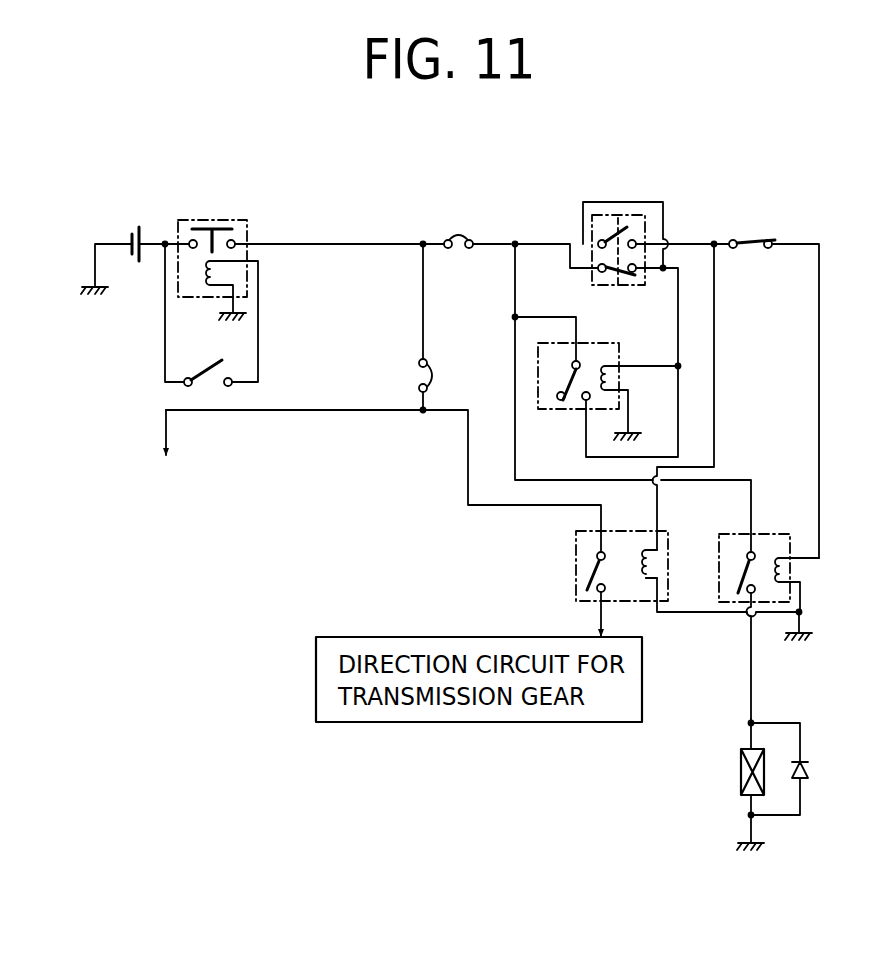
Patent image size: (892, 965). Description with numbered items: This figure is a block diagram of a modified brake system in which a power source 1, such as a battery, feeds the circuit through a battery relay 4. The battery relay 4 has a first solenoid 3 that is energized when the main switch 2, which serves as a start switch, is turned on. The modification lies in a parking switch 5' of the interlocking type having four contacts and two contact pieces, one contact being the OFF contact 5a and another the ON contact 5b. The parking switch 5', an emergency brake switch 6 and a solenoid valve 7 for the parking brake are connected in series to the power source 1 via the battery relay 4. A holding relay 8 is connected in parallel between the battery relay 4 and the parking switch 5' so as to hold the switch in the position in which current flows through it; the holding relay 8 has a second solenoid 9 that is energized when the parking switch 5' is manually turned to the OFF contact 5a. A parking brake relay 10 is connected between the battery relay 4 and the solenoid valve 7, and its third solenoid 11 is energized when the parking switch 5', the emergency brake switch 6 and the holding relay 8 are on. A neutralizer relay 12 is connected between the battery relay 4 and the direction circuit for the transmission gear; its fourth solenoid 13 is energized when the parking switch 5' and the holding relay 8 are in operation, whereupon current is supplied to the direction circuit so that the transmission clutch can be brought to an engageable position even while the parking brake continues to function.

The power source 1 is at (134, 224).
The main switch 2 is at (200, 384).
The first solenoid 3 is at (209, 278).
The battery relay 4 is at (209, 216).
The parking switch 5' is at (664, 250).
The OFF contact 5a is at (636, 274).
The ON contact 5b is at (638, 238).
The emergency brake switch 6 is at (748, 238).
The solenoid valve 7 is at (740, 778).
The holding relay 8 is at (562, 412).
The second solenoid 9 is at (604, 372).
The parking brake relay 10 is at (773, 530).
The third solenoid 11 is at (786, 572).
The neutralizer relay 12 is at (570, 570).
The fourth solenoid 13 is at (637, 572).